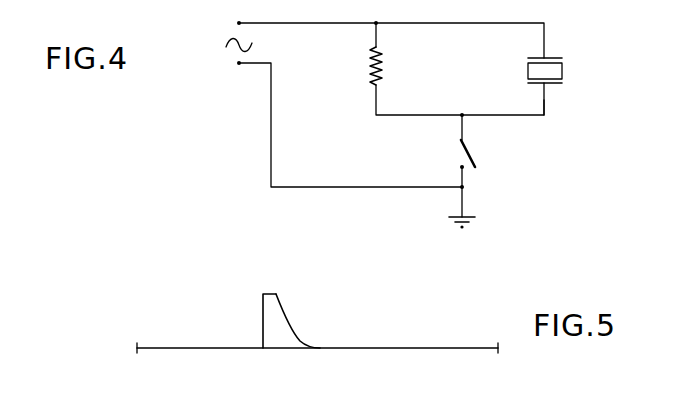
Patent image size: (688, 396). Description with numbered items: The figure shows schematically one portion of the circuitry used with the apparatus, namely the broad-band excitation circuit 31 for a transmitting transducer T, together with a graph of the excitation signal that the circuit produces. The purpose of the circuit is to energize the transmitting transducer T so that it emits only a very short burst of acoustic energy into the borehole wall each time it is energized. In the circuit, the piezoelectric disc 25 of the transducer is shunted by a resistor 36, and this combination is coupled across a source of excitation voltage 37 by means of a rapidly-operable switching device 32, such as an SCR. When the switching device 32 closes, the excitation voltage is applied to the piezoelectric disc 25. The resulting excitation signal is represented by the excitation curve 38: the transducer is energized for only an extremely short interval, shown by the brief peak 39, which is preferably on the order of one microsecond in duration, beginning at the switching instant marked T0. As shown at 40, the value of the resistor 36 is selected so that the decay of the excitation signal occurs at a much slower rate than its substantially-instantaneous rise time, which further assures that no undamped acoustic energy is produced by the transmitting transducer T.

In FIG. 4, the piezoelectric disc 25 is at (565, 71).
In FIG. 4, the broad-band excitation circuit 31 is at (254, 160).
In FIG. 4, the rapidly-operable switching device 32 is at (470, 170).
In FIG. 4, the resistor 36 is at (382, 72).
In FIG. 4, the source of excitation voltage 37 is at (227, 50).
In FIG. 5, the excitation curve 38 is at (402, 347).
In FIG. 5, the brief peak 39 is at (277, 293).
In FIG. 5, the decay of excitation signal 40 is at (307, 338).
In FIG. 4, the transmitting transducer T is at (556, 124).
In FIG. 5, the time of switching T0 is at (263, 349).